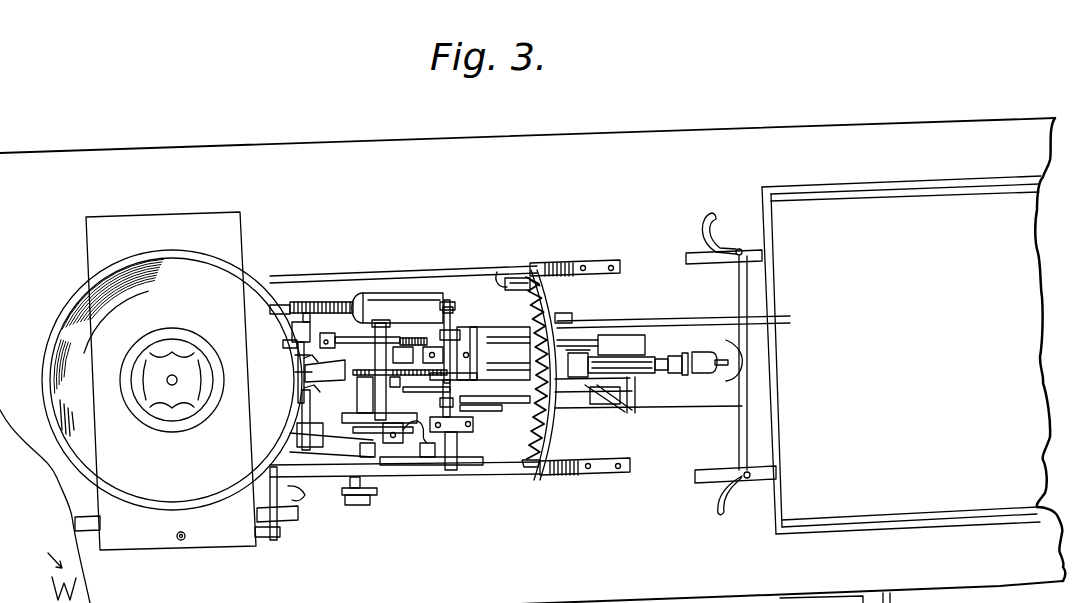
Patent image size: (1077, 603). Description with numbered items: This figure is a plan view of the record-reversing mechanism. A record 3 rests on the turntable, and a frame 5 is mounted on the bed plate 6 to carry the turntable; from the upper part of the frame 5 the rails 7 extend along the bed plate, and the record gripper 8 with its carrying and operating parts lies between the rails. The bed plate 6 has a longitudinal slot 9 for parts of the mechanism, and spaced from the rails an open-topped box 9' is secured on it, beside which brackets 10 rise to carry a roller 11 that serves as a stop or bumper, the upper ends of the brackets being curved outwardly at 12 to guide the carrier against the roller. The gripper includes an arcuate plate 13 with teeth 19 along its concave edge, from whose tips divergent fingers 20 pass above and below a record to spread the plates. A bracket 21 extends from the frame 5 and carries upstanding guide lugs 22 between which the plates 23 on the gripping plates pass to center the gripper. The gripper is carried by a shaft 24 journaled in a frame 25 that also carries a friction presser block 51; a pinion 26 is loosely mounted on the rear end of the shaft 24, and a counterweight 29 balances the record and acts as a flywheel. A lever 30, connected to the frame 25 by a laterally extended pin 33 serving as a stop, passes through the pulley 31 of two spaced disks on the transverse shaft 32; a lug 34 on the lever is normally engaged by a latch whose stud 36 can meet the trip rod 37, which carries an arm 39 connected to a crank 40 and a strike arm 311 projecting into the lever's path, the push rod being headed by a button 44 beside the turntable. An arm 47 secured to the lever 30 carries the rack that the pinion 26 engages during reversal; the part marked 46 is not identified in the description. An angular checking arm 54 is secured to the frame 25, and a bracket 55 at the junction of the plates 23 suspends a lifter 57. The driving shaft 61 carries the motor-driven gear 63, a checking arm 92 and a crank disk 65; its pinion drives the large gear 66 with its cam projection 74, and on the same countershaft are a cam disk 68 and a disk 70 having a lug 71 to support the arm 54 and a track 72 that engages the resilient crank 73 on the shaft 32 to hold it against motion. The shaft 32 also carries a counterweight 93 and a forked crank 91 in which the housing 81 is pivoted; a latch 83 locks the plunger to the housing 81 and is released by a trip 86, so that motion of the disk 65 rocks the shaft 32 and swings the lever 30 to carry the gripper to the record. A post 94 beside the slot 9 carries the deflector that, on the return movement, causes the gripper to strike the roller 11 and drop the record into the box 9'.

The record 3 is at (192, 272).
The frame 5 is at (240, 536).
The bed plate 6 is at (532, 360).
The rails 7 is at (414, 277).
The record gripper 8 is at (530, 274).
The longitudinal slot 9 is at (672, 376).
The box or casing 9' is at (901, 355).
The brackets 10 is at (770, 246).
The roller 11 is at (772, 285).
The outwardly curved upper extremities 12 is at (727, 238).
The arcuate plate 13 is at (552, 298).
The teeth 19 is at (534, 274).
The divergent fingers 20 is at (517, 277).
The bracket 21 is at (313, 377).
The guide lugs 22 is at (300, 358).
The longitudinally extending plates 23 is at (607, 348).
The shaft 24 is at (650, 357).
The frame 25 is at (653, 374).
The pinion 26 is at (740, 350).
The counterweight 29 is at (703, 352).
The lever 30 is at (493, 368).
The pulley or disk 31 is at (480, 331).
The shaft 32 is at (463, 433).
The pin 33 is at (636, 404).
The lug 34 is at (493, 403).
The stud 36 is at (485, 411).
The trip rod 37 is at (431, 434).
The arm 39 is at (277, 502).
The crank 40 is at (276, 530).
The head or button 44 is at (185, 534).
The rack bar 46 is at (500, 282).
The arm 47 is at (622, 445).
The friction presser block 51 is at (684, 365).
The checking arm 54 is at (648, 338).
The bracket 55 is at (603, 340).
The lifter 57 is at (533, 324).
The driving shaft 61 is at (283, 315).
The gear 63 is at (332, 300).
The crank disk 65 is at (332, 464).
The large gear 66 is at (360, 365).
The cam disk 68 is at (405, 432).
The disk 70 is at (404, 342).
The lug 71 is at (389, 353).
The track 72 is at (316, 298).
The resilient crank 73 is at (457, 327).
The cam projection 74 is at (370, 378).
The housing 81 is at (372, 468).
The latch 83 is at (297, 497).
The trip 86 is at (370, 507).
The forked crank 91 is at (455, 480).
The checking arm 92 is at (293, 339).
The counterweight 93 is at (385, 305).
The post 94 is at (563, 316).
The strike arm 311 is at (433, 440).